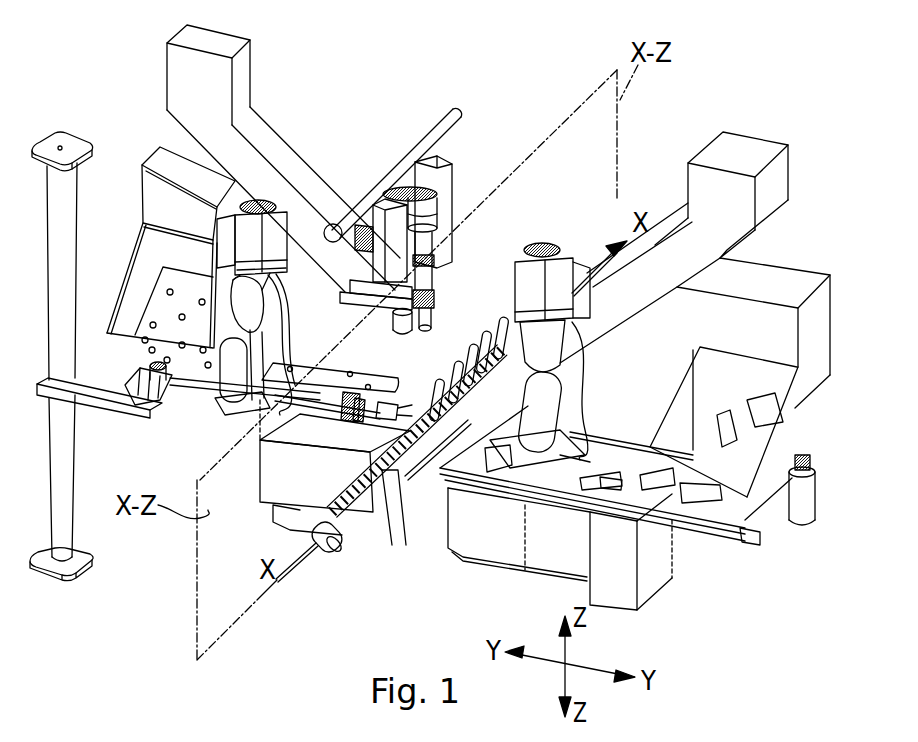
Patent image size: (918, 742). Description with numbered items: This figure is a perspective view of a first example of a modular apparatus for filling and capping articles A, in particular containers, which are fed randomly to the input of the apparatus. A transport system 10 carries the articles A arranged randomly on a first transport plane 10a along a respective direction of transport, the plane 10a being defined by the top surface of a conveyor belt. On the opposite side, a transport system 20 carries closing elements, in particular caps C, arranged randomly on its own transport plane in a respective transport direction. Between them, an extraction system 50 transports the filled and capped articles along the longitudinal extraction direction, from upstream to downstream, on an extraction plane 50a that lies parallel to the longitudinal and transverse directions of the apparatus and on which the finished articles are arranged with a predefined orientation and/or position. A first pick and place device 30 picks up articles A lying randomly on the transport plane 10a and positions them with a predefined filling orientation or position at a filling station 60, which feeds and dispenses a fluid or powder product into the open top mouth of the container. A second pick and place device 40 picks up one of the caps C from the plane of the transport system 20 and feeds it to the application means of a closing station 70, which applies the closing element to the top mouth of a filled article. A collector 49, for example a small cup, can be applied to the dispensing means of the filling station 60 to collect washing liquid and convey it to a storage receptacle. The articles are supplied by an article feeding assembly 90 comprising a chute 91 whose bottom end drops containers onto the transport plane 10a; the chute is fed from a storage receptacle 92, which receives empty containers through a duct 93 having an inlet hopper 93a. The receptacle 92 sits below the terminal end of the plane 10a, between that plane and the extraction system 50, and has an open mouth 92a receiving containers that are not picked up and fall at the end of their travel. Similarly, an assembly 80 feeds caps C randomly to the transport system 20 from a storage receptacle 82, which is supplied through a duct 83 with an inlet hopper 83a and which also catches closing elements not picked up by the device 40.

The transport system 10 is at (612, 540).
The transport plane 10a is at (682, 528).
The transport system 20 is at (190, 412).
The first pick and place device 30 is at (585, 225).
The second pick and place device 40 is at (230, 373).
The collector 49 is at (127, 378).
The extraction system 50 is at (300, 594).
The extraction plane 50a is at (348, 538).
The filling station 60 is at (342, 364).
The closing station 70 is at (455, 255).
The assembly for feeding closing elements 80 is at (168, 245).
The storage receptacle 82 is at (272, 468).
The duct 83 is at (195, 87).
The inlet hopper 83a is at (207, 42).
The article feeding assembly 90 is at (745, 328).
The chute 91 is at (752, 388).
The storage receptacle 92 is at (458, 530).
The open mouth 92a is at (398, 535).
The duct 93 is at (700, 202).
The inlet hopper 93a is at (745, 158).
The articles A is at (742, 503).
The caps C is at (181, 350).